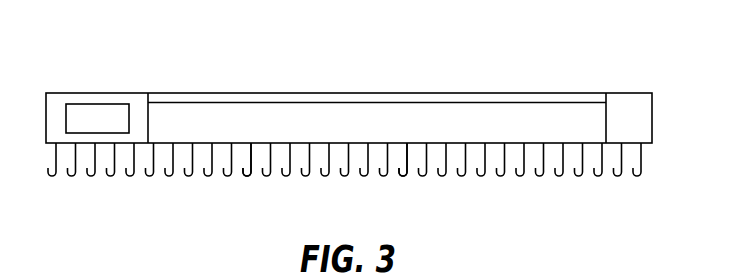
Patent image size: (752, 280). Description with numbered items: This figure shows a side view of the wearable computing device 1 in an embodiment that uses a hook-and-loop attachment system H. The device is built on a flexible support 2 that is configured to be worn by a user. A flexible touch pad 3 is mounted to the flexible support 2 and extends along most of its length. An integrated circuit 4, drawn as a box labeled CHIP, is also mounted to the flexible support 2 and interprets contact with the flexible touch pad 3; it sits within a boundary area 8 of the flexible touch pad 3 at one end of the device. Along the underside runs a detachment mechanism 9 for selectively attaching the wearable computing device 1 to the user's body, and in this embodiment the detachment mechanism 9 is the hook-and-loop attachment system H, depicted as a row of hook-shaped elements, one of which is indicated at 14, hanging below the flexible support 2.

The wearable computing device 1 is at (574, 76).
The flexible support 2 is at (653, 112).
The flexible touch pad 3 is at (378, 92).
The integrated circuit 4 is at (97, 104).
The boundary area 8 is at (58, 120).
The detachment mechanism 9 is at (72, 175).
The hook-and-loop attachment system H is at (247, 177).
The pin 14 is at (402, 177).